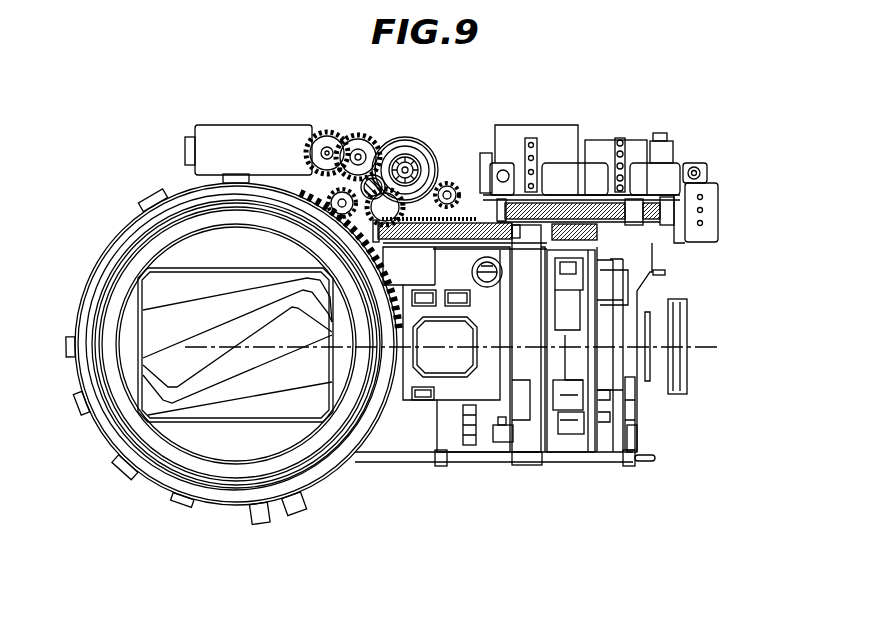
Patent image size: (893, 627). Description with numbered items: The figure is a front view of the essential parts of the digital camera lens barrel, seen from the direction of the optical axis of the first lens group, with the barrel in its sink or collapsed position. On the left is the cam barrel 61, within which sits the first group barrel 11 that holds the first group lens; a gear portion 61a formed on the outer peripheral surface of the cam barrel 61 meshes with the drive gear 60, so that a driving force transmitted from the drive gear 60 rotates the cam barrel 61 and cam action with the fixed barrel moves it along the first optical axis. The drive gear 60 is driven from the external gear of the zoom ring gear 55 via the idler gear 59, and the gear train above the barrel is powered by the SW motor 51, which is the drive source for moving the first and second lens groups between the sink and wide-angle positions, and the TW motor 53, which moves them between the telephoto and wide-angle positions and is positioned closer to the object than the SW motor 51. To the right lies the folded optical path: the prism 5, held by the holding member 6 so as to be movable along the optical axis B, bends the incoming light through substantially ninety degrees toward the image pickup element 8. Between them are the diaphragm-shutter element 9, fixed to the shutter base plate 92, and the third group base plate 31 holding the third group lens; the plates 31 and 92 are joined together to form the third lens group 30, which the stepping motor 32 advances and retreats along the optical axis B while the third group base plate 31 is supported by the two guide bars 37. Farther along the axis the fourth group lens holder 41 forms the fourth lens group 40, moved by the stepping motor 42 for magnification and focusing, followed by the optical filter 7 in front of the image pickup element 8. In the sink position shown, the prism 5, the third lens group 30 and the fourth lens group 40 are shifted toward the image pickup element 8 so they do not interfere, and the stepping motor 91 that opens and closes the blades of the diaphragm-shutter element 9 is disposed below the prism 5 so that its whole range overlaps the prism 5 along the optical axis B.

The prism 5 is at (427, 432).
The holding member 6 is at (395, 432).
The optical filter 7 is at (634, 370).
The image pickup element 8 is at (680, 385).
The diaphragm-shutter element 9 is at (531, 438).
The first group barrel 11 is at (224, 455).
The third lens group 30 is at (487, 447).
The third group base plate 31 is at (562, 440).
The stepping motor 32 is at (598, 143).
The guide bars 37 is at (587, 458).
The fourth lens group 40 is at (628, 458).
The fourth group lens holder 41 is at (647, 442).
The stepping motor 42 is at (703, 183).
The SW motor 51 is at (210, 133).
The TW motor 53 is at (507, 125).
The zoom ring gear 55 is at (415, 140).
The idler gear 59 is at (382, 178).
The drive gear 60 is at (330, 188).
The cam barrel 61 is at (148, 468).
The gear portion 61a is at (402, 252).
The stepping motor 91 is at (450, 440).
The shutter base plate 92 is at (522, 442).
The optical axis B is at (700, 347).